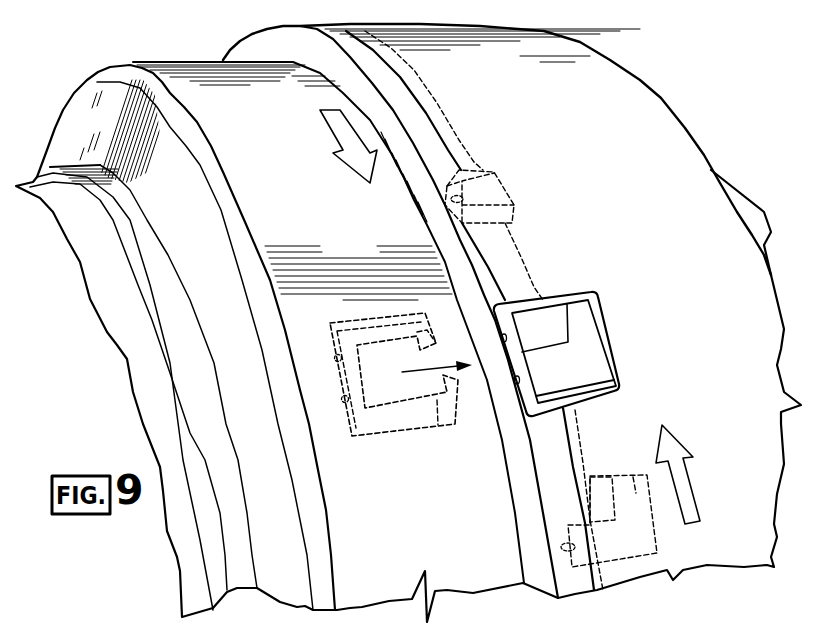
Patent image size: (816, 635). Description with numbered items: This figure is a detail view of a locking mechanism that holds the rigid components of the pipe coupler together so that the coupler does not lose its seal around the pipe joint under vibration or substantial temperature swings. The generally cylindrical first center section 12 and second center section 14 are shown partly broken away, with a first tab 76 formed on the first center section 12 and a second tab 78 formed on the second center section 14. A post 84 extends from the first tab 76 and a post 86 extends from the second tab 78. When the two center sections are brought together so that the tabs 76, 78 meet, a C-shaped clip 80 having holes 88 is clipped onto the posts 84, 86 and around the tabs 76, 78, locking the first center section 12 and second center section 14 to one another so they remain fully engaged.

The first center section 12 is at (105, 63).
The second center section 14 is at (661, 101).
The first tab 76 is at (490, 183).
The second tab 78 is at (586, 353).
The C-shaped clip 80 is at (598, 393).
The post 84 is at (452, 201).
The post 86 is at (560, 547).
The holes 88 is at (342, 399).